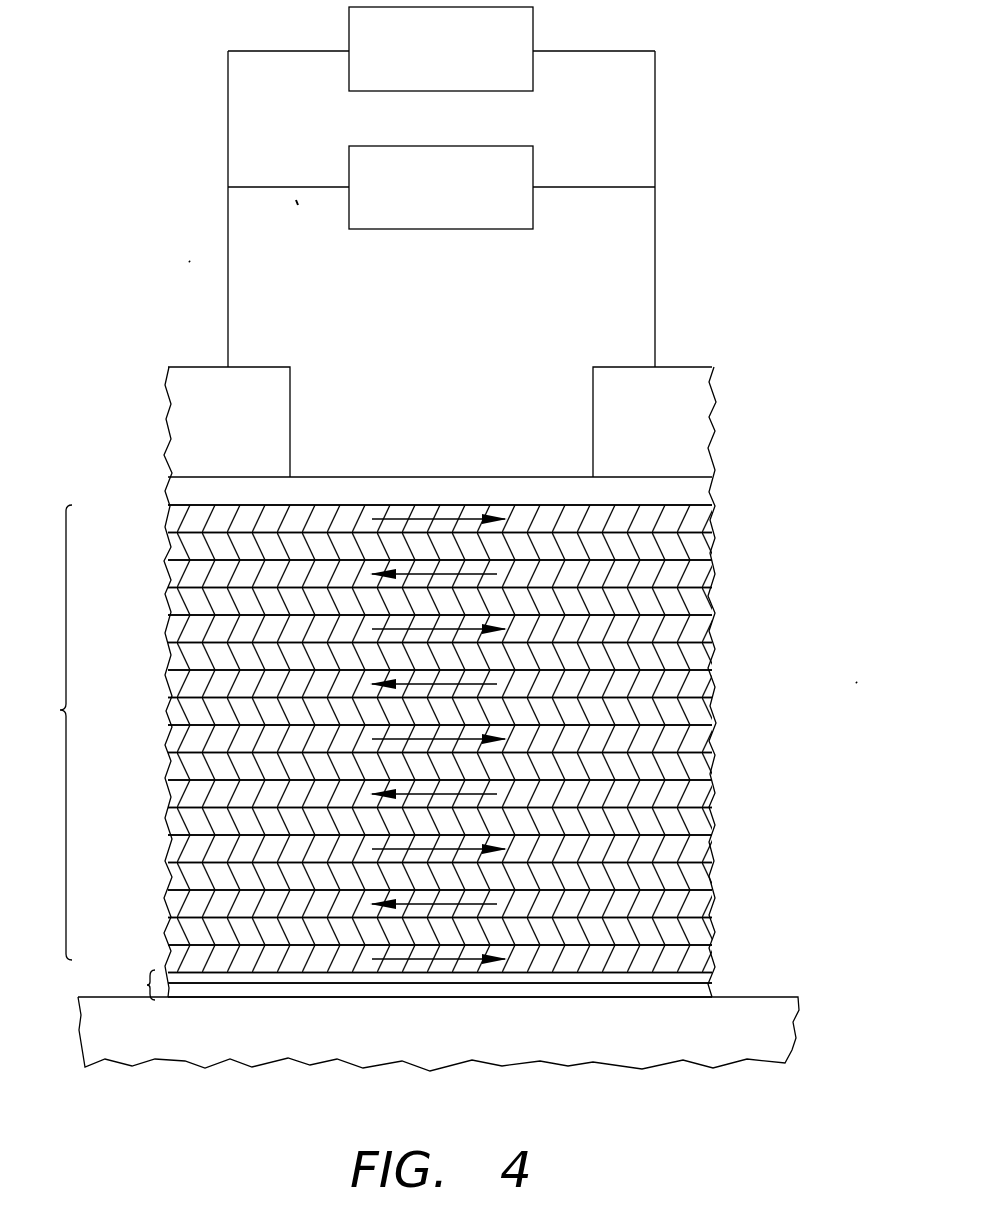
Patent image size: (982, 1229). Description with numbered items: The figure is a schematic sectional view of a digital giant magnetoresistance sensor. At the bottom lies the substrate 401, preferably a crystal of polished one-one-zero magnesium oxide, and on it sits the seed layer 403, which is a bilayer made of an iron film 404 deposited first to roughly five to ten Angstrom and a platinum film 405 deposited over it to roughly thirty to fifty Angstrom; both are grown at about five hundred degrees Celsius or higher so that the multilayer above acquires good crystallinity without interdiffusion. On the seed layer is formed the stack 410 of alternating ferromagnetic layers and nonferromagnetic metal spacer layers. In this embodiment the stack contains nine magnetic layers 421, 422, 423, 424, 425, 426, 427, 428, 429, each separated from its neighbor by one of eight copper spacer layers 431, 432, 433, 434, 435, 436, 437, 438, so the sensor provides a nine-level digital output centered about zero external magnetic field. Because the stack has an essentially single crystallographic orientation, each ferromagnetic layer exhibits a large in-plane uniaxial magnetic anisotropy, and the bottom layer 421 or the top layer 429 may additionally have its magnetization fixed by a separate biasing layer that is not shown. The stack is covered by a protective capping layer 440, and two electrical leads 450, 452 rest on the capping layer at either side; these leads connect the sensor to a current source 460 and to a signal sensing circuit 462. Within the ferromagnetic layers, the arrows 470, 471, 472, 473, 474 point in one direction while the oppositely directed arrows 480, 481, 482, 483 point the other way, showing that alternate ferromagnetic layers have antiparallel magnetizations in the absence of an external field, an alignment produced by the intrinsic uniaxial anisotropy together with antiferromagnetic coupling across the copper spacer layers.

The substrate 401 is at (786, 1026).
The seed layer 403 is at (142, 984).
The iron film 404 is at (706, 991).
The platinum film 405 is at (706, 969).
The stack 410 is at (44, 732).
The ferromagnetic layer 421 is at (700, 952).
The ferromagnetic layer 422 is at (703, 908).
The ferromagnetic layer 423 is at (703, 852).
The ferromagnetic layer 424 is at (703, 798).
The ferromagnetic layer 425 is at (703, 742).
The ferromagnetic layer 426 is at (703, 688).
The ferromagnetic layer 427 is at (703, 630).
The ferromagnetic layer 428 is at (703, 575).
The ferromagnetic layer 429 is at (703, 520).
The nonferromagnetic metal spacer layer 431 is at (172, 930).
The nonferromagnetic metal spacer layer 432 is at (173, 875).
The nonferromagnetic metal spacer layer 433 is at (172, 820).
The nonferromagnetic metal spacer layer 434 is at (174, 765).
The nonferromagnetic metal spacer layer 435 is at (172, 711).
The nonferromagnetic metal spacer layer 436 is at (172, 656).
The nonferromagnetic metal spacer layer 437 is at (172, 601).
The nonferromagnetic metal spacer layer 438 is at (172, 546).
The capping layer 440 is at (703, 492).
The electrical lead 450 is at (186, 408).
The electrical lead 452 is at (700, 417).
The current source 460 is at (520, 160).
The signal sensing circuit 462 is at (520, 23).
The arrow 470 is at (375, 958).
The arrow 471 is at (375, 848).
The arrow 472 is at (375, 738).
The arrow 473 is at (375, 628).
The arrow 474 is at (375, 518).
The oppositely directed arrow 480 is at (497, 901).
The oppositely directed arrow 481 is at (497, 791).
The oppositely directed arrow 482 is at (497, 681).
The oppositely directed arrow 483 is at (497, 571).